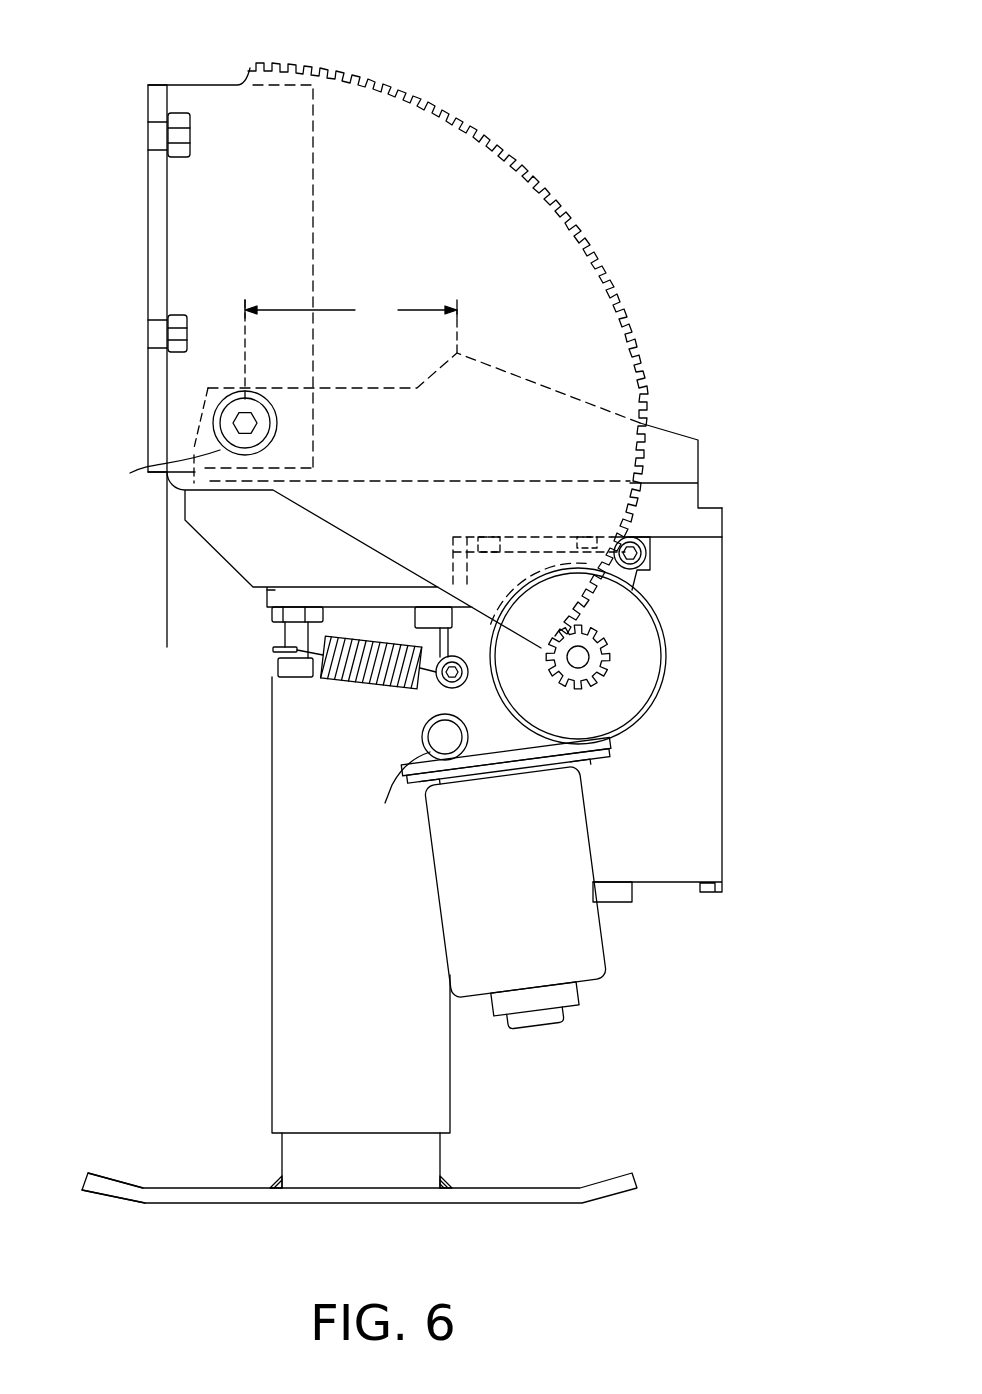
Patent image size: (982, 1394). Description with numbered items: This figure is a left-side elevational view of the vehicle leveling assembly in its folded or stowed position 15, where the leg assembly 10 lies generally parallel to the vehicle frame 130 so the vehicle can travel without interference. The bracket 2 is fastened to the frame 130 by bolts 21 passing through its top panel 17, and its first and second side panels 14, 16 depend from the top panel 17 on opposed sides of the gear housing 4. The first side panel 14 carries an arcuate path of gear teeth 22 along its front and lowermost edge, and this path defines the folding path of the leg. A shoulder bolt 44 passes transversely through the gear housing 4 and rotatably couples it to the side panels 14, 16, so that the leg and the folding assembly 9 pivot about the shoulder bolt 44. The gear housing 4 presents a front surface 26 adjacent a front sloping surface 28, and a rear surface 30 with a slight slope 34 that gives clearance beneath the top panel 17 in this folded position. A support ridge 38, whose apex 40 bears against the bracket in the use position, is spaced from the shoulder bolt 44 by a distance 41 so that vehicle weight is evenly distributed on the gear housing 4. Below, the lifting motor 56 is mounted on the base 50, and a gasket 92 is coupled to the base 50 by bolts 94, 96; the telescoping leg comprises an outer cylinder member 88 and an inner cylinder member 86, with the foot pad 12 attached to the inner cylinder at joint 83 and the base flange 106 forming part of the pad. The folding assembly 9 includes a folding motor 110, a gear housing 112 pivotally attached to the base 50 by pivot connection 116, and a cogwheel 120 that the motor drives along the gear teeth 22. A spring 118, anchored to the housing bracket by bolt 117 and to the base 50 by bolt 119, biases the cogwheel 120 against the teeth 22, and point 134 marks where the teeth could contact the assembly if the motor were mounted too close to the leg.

The bracket 2 is at (104, 257).
The gear housing 4 is at (665, 407).
The folding assembly 9 is at (613, 1000).
The leg assembly 10 is at (253, 1068).
The foot pad 12 is at (567, 1187).
The first side panel 14 is at (454, 349).
The folded position 15 is at (838, 394).
The second side panel 16 is at (313, 257).
The top panel 17 is at (148, 388).
The bolts 21 is at (191, 132).
The gear teeth 22 is at (490, 140).
The front surface 26 is at (698, 470).
The front sloping surface 28 is at (563, 402).
The rear surface 30 is at (190, 440).
The slight slope 34 is at (200, 400).
The support ridge 38 is at (490, 373).
The apex 40 is at (462, 352).
The distance 41 is at (351, 346).
The shoulder bolt 44 is at (143, 462).
The base 50 is at (722, 508).
The lifting motor 56 is at (703, 822).
The joint 83 is at (447, 1180).
The inner cylinder member 86 is at (394, 1172).
The outer cylinder member 88 is at (402, 1024).
The gasket 92 is at (267, 595).
The bolt 94 is at (327, 606).
The bolt 96 is at (423, 615).
The base flange 106 is at (177, 1200).
The folding motor 110 is at (522, 897).
The gear housing 112 is at (650, 677).
The pivot connection 116 is at (645, 553).
The bolt 117 is at (440, 680).
The spring 118 is at (350, 680).
The bolt 119 is at (290, 668).
The cogwheel 120 is at (600, 640).
The vehicle frame 130 is at (167, 625).
The contact point 134 is at (400, 760).